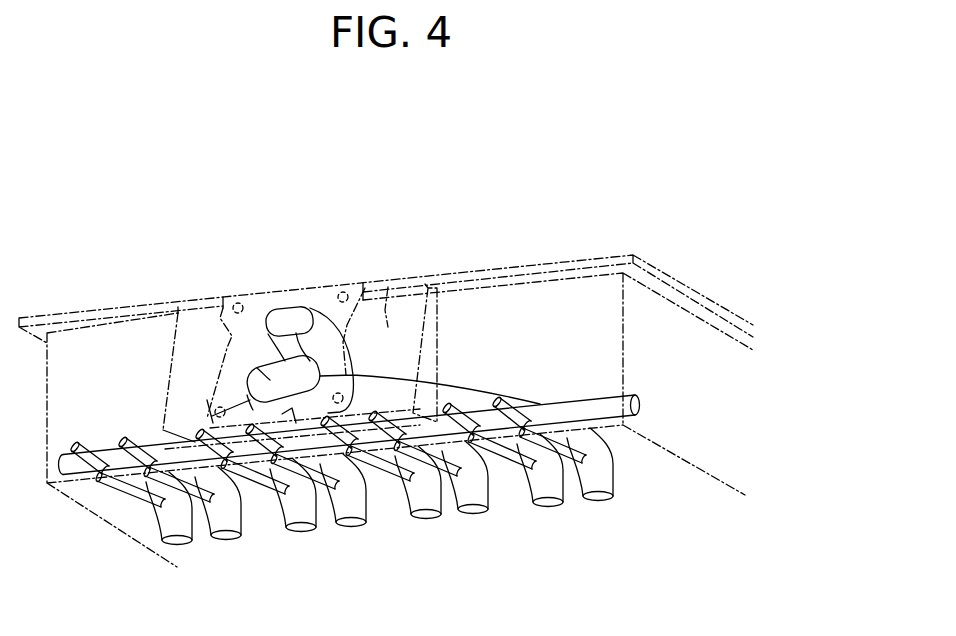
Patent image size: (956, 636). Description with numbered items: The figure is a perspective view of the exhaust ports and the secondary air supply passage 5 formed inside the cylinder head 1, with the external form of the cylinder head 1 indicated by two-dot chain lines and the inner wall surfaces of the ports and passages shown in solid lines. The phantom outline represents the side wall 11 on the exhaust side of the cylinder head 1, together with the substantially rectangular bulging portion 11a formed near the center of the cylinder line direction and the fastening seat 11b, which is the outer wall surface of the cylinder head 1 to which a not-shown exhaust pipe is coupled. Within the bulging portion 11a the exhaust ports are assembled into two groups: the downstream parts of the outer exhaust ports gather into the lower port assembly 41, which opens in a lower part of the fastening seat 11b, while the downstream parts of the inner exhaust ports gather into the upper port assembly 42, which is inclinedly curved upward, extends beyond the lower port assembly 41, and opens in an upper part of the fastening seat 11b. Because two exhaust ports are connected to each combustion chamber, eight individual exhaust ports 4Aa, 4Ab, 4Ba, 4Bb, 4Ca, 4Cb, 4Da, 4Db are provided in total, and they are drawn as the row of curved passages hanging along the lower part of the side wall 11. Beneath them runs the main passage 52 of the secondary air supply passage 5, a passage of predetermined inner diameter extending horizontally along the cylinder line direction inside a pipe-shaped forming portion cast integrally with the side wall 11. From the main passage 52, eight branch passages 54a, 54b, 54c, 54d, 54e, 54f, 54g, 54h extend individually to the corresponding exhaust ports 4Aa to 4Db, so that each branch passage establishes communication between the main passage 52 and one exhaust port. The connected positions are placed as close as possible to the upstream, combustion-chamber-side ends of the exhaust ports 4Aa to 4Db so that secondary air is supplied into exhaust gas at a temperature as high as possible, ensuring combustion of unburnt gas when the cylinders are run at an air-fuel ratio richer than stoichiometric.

The cylinder head 1 is at (82, 210).
The side wall 11 is at (517, 317).
The bulging portion 11a is at (388, 287).
The fastening seat 11b is at (275, 358).
The lower port assembly 41 is at (263, 365).
The upper port assembly 42 is at (288, 318).
The secondary air supply passage 5 is at (593, 397).
The main passage 52 is at (550, 413).
The branch passage 54a is at (586, 464).
The branch passage 54b is at (510, 468).
The branch passage 54c is at (458, 480).
The branch passage 54d is at (396, 484).
The branch passage 54e is at (330, 493).
The branch passage 54f is at (272, 496).
The branch passage 54g is at (207, 493).
The branch passage 54h is at (144, 493).
The exhaust port 4Aa is at (598, 496).
The exhaust port 4Ab is at (548, 502).
The exhaust port 4Ba is at (473, 509).
The exhaust port 4Bb is at (426, 514).
The exhaust port 4Ca is at (351, 522).
The exhaust port 4Cb is at (301, 527).
The exhaust port 4Da is at (226, 535).
The exhaust port 4Db is at (177, 540).